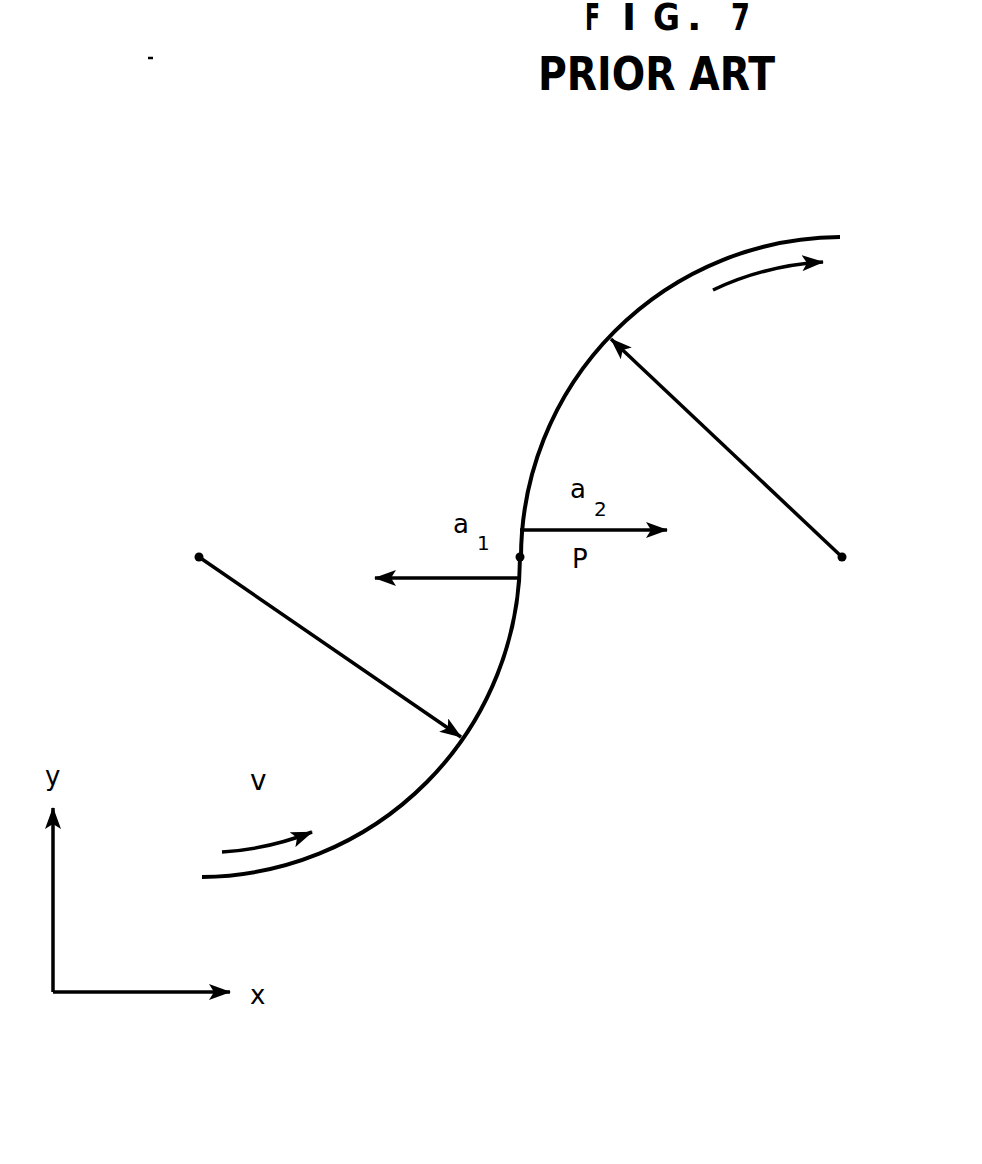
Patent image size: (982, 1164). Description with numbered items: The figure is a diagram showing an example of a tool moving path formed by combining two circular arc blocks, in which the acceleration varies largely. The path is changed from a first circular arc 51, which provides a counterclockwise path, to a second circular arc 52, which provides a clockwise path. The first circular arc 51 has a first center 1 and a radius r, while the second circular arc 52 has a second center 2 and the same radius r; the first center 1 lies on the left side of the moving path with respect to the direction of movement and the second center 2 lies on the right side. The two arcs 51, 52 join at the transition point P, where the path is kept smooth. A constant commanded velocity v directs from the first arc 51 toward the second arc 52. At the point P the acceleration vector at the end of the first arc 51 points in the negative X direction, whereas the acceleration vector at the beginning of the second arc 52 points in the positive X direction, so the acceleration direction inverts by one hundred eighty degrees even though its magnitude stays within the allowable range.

The first circular arc 51 is at (430, 782).
The second circular arc 52 is at (647, 300).
The center O1 of first arc and its radius r 1 is at (324, 620).
The center O2 of second arc and its radius r 2 is at (741, 450).